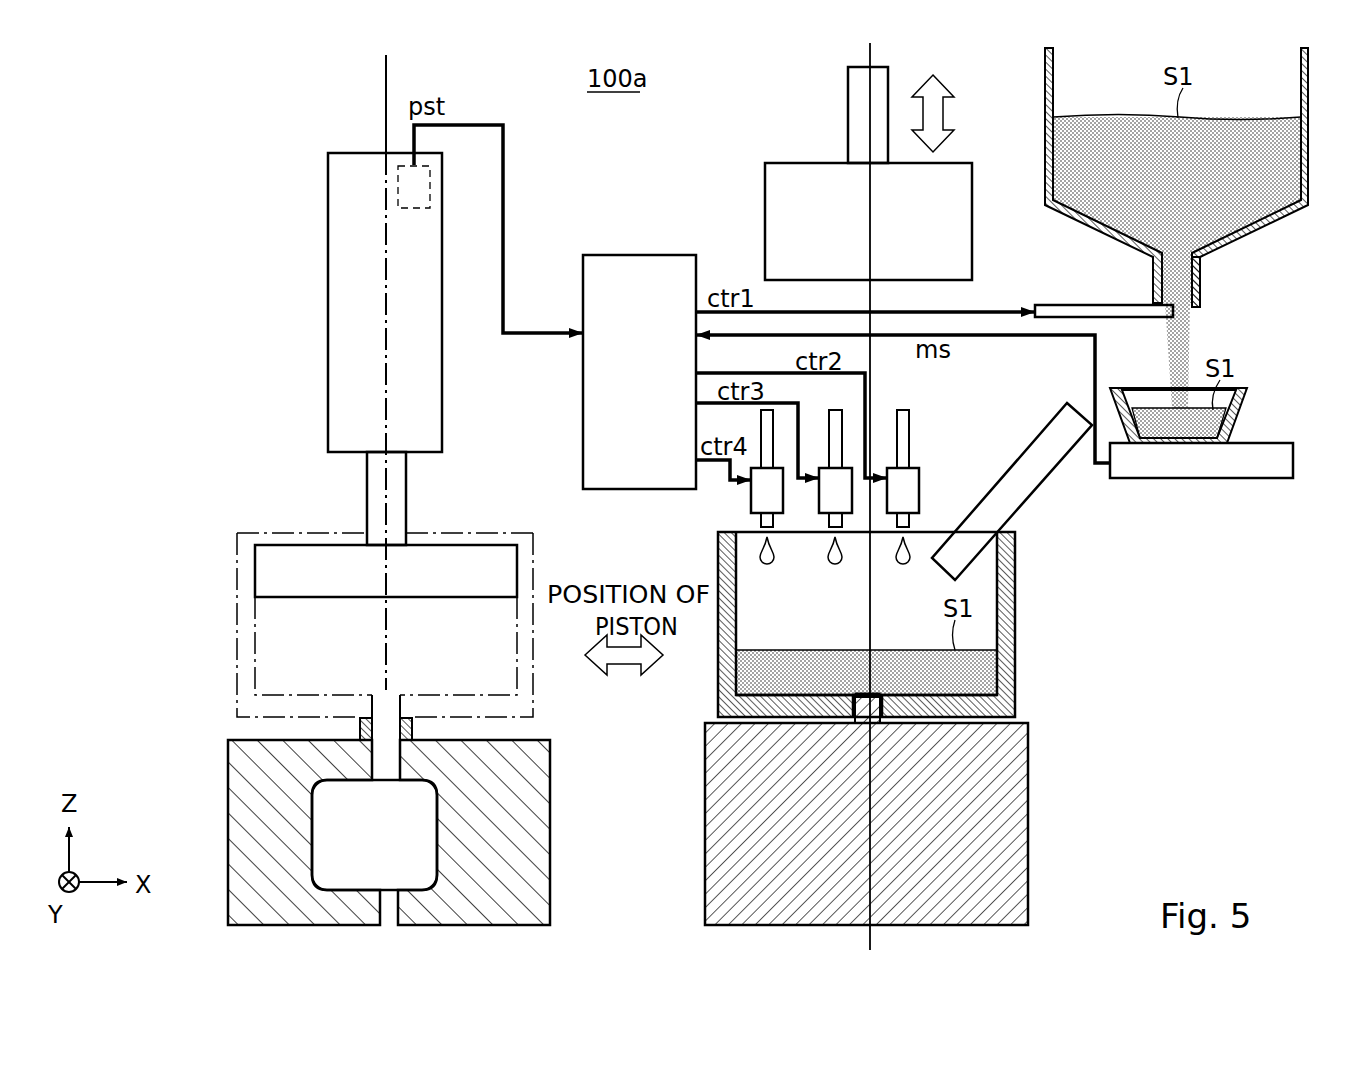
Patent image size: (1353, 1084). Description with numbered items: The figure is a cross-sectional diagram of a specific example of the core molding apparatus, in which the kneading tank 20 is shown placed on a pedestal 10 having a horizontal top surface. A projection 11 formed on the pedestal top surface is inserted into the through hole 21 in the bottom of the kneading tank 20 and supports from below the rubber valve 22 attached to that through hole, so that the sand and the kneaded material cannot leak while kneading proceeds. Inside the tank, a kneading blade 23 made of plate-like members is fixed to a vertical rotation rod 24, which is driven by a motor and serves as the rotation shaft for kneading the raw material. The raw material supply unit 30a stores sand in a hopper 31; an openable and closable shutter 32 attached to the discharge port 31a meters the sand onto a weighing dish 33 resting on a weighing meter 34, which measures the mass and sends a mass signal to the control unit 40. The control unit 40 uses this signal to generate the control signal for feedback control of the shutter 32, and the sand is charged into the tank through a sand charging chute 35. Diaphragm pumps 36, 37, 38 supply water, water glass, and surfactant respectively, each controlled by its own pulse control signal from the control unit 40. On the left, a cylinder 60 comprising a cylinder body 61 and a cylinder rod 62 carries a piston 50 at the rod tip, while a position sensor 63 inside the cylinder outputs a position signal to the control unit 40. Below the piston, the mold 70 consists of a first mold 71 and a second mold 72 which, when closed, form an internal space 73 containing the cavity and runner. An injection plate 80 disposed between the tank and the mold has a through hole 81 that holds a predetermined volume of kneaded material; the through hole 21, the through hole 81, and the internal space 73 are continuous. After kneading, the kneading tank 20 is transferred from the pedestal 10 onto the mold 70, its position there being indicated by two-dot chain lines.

The pedestal 10 is at (1028, 745).
The projection 11 is at (1015, 705).
The kneading tank 20 is at (535, 553).
The through hole 21 is at (871, 695).
The valve 22 is at (868, 693).
The kneading blade 23 is at (765, 190).
The rotation rod 24 is at (848, 135).
The raw material supply unit 30a is at (1132, 177).
The hopper 31 is at (1045, 183).
The discharge port 31a is at (1200, 283).
The shutter 32 is at (1070, 305).
The weighing dish 33 is at (1250, 394).
The weighing meter 34 is at (1293, 462).
The sand charging chute 35 is at (1040, 480).
The pump 36 is at (919, 482).
The pump 37 is at (819, 485).
The pump 38 is at (751, 500).
The control unit 40 is at (613, 258).
The piston 50 is at (475, 548).
The cylinder 60 is at (443, 349).
The cylinder body 61 is at (442, 408).
The cylinder rod 62 is at (406, 471).
The position sensor 63 is at (430, 190).
The mold 70 is at (418, 829).
The first mold 71 is at (272, 916).
The second mold 72 is at (522, 916).
The internal space 73 is at (308, 840).
The injection plate 80 is at (412, 729).
The through hole 81 is at (372, 725).